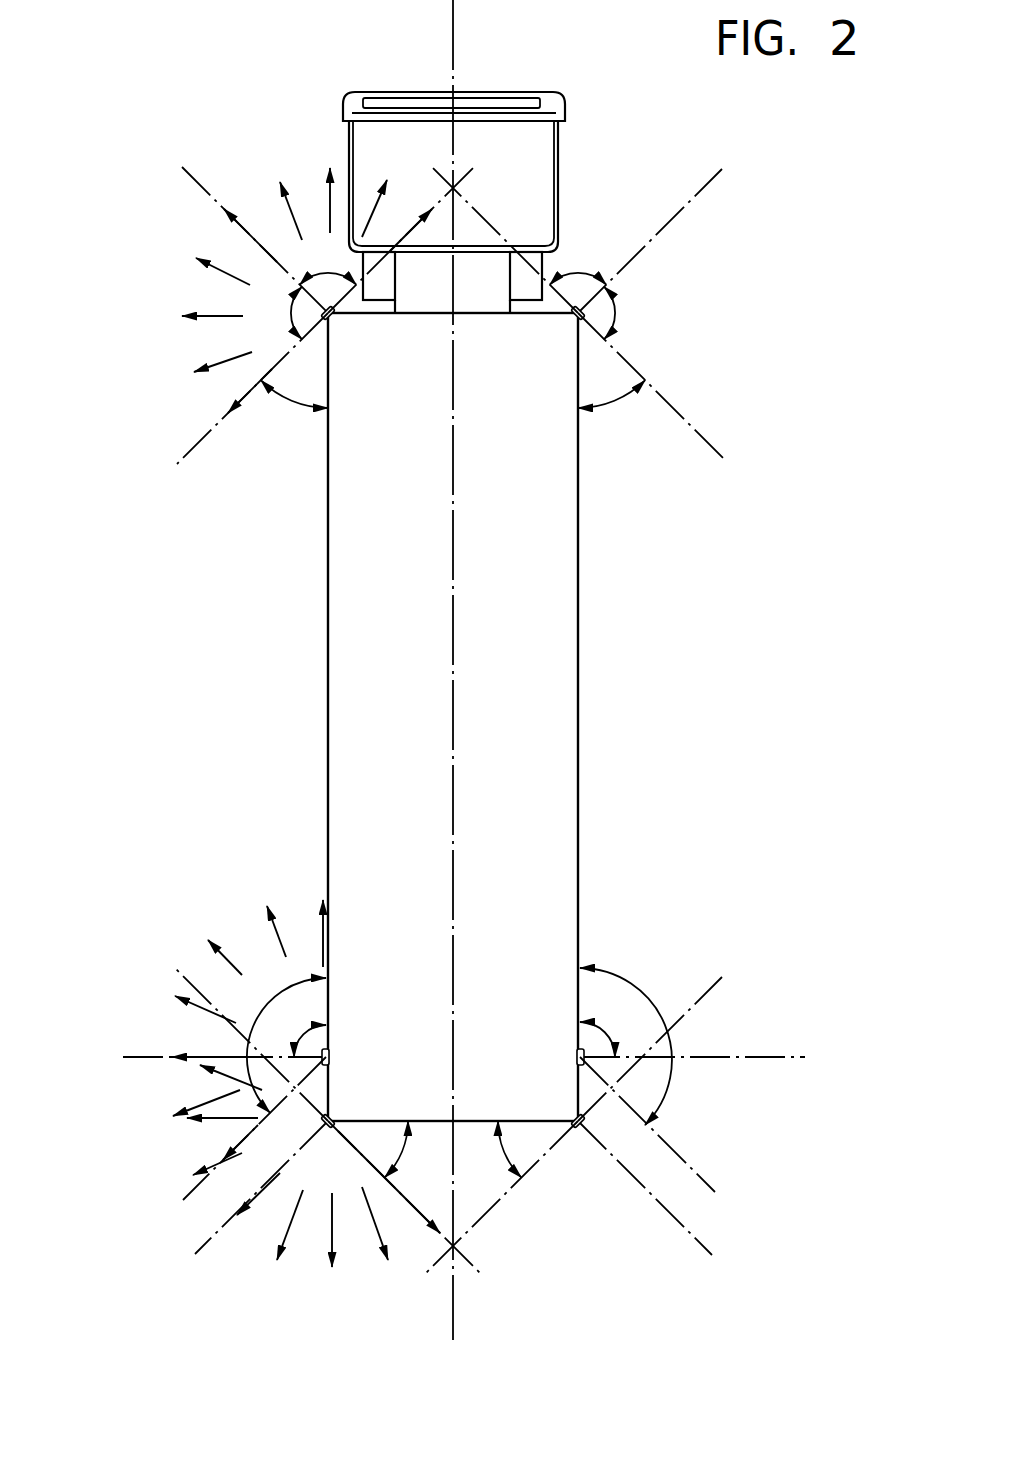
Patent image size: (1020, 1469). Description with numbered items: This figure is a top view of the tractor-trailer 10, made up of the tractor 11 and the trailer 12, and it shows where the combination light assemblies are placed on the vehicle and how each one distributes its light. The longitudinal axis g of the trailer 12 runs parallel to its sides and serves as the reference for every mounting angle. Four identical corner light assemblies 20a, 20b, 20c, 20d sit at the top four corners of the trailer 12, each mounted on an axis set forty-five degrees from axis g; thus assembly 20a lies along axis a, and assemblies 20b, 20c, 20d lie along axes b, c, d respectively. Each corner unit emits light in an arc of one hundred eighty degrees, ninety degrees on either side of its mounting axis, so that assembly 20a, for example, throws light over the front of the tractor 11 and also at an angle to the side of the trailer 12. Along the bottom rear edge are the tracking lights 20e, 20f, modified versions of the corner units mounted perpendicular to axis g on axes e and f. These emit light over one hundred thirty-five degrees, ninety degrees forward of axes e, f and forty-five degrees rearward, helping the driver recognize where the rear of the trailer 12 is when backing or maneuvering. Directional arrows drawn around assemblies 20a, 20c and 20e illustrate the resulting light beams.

The tractor-trailer 10 is at (312, 639).
The tractor 11 is at (535, 168).
The trailer 12 is at (558, 740).
The light assembly 20a is at (333, 317).
The light assembly 20b is at (573, 318).
The light assembly 20c is at (333, 1117).
The light assembly 20d is at (571, 1117).
The tracking light 20e is at (331, 1053).
The tracking light 20f is at (575, 1053).
The mounting axis a is at (208, 193).
The mounting axis b is at (690, 204).
The mounting axis c is at (208, 1243).
The mounting axis d is at (700, 1245).
The mounting axis e is at (152, 1057).
The mounting axis f is at (788, 1058).
The longitudinal axis g is at (453, 43).